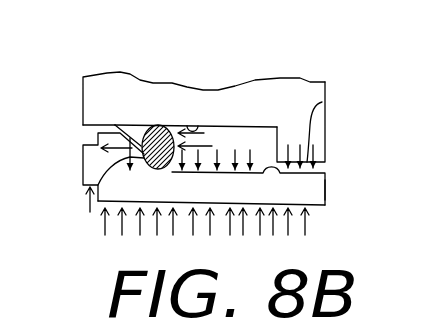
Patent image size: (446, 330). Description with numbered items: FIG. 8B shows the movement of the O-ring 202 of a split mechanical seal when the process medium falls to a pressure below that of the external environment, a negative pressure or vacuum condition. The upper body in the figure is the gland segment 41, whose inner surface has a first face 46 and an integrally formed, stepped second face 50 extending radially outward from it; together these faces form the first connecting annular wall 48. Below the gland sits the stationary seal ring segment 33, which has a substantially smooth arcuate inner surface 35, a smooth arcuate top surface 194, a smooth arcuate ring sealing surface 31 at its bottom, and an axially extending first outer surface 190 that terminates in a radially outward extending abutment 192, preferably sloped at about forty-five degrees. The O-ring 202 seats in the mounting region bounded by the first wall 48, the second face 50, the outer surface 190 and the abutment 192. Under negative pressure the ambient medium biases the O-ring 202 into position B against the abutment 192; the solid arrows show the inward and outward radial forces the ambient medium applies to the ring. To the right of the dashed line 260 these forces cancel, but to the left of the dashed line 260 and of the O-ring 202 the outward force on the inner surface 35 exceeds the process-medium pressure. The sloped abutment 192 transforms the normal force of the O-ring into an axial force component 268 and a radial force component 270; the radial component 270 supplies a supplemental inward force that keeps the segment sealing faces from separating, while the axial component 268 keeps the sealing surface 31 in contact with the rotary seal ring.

The gland segment 41 is at (105, 70).
The abutment 192 is at (131, 125).
The position B is at (150, 126).
The O-ring 202 is at (163, 126).
The second face 50 is at (197, 126).
The first connecting annular wall 48 is at (275, 131).
The first face 46 is at (322, 102).
The arcuate ring sealing surface 31 is at (83, 150).
The axial force component 268 is at (128, 151).
The radial force component 270 is at (86, 191).
The stationary seal ring segment 33 is at (328, 184).
The top surface 194 is at (328, 193).
The inner surface 35 is at (327, 205).
The dashed line 260 is at (147, 206).
The first outer surface 190 is at (282, 206).